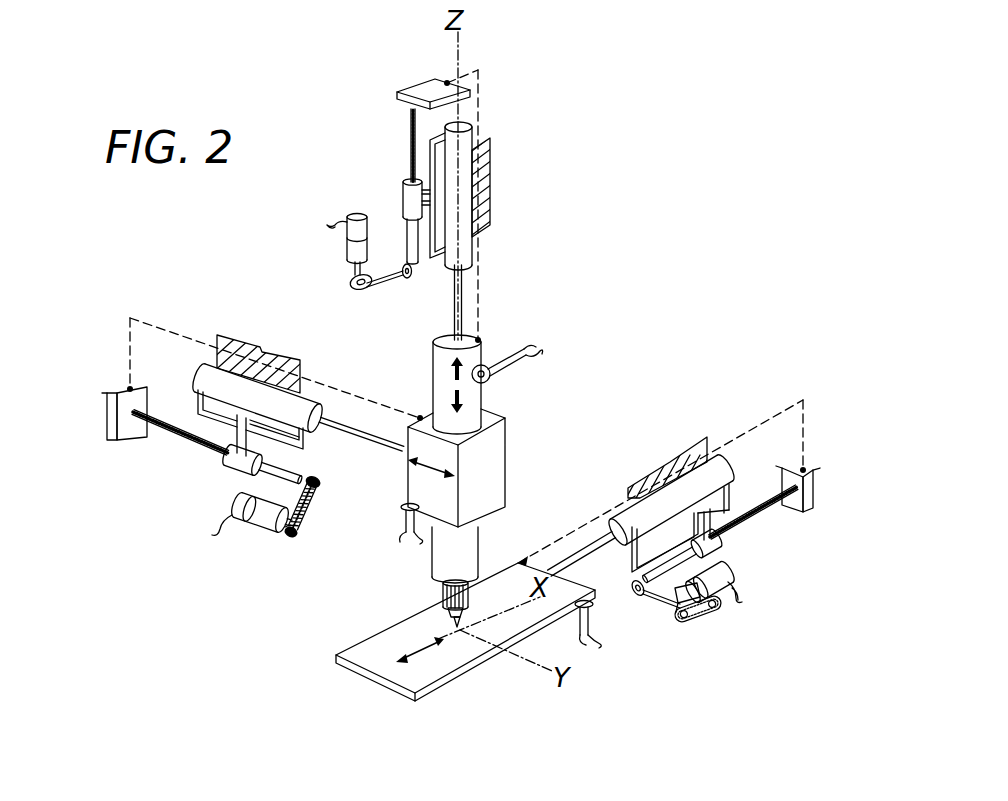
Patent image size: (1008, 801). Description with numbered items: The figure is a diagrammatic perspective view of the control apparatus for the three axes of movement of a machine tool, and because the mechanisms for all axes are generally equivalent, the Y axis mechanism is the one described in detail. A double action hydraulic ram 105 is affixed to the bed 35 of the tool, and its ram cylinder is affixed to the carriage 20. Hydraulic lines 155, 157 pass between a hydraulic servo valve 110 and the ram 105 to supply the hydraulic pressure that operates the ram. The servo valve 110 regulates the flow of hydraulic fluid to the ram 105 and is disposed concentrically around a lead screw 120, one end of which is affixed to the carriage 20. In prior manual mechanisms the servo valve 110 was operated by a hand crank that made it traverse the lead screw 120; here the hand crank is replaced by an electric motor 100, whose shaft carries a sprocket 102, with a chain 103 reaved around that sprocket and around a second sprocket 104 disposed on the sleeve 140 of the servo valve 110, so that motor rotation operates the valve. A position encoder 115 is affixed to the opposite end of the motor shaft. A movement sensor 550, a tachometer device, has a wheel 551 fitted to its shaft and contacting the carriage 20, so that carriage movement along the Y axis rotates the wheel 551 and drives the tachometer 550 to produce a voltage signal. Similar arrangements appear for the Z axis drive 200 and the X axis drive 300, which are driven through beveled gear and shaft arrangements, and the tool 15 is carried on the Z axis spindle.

The tool chuck 15 is at (441, 590).
The carriage 20 is at (107, 422).
The bed 35 is at (253, 352).
The electric motor 100 is at (255, 536).
The sprocket 102 is at (292, 537).
The chain 103 is at (306, 516).
The sprocket 104 is at (317, 485).
The double action hydraulic ram 105 is at (211, 371).
The hydraulic servo valve 110 is at (230, 463).
The position encoder 115 is at (232, 504).
The lead screw 120 is at (165, 437).
The sleeve 140 is at (288, 474).
The hydraulic line 155 is at (205, 413).
The hydraulic line 157 is at (304, 441).
The Z-axis drive actuator 200 is at (334, 247).
The Y-axis drive assembly 300 is at (748, 573).
The movement sensor 550 is at (404, 537).
The wheel 551 is at (403, 506).